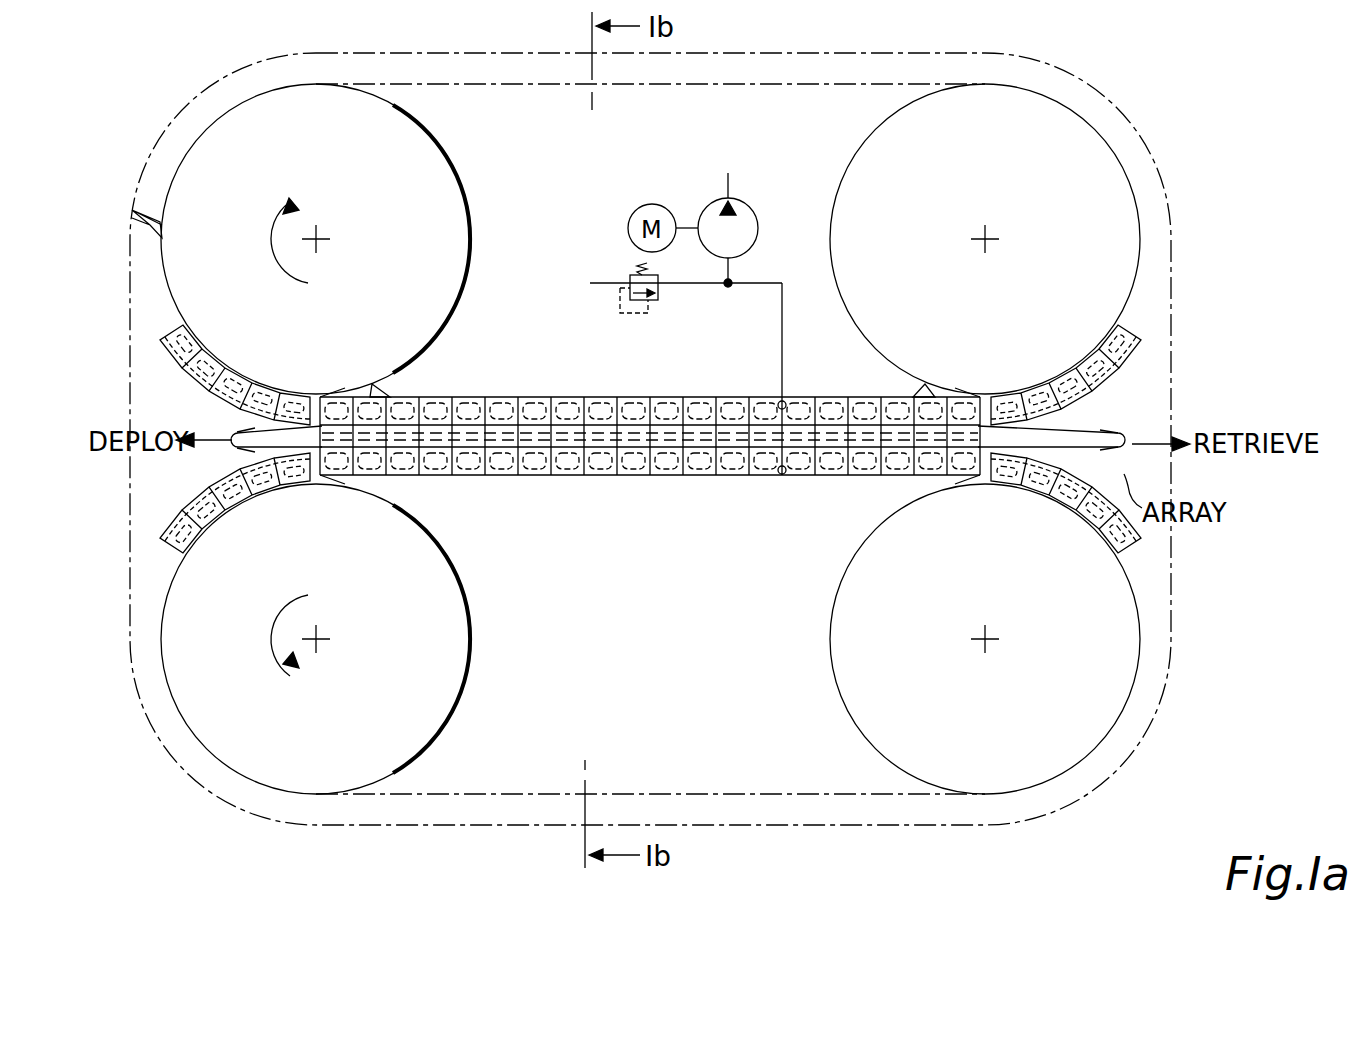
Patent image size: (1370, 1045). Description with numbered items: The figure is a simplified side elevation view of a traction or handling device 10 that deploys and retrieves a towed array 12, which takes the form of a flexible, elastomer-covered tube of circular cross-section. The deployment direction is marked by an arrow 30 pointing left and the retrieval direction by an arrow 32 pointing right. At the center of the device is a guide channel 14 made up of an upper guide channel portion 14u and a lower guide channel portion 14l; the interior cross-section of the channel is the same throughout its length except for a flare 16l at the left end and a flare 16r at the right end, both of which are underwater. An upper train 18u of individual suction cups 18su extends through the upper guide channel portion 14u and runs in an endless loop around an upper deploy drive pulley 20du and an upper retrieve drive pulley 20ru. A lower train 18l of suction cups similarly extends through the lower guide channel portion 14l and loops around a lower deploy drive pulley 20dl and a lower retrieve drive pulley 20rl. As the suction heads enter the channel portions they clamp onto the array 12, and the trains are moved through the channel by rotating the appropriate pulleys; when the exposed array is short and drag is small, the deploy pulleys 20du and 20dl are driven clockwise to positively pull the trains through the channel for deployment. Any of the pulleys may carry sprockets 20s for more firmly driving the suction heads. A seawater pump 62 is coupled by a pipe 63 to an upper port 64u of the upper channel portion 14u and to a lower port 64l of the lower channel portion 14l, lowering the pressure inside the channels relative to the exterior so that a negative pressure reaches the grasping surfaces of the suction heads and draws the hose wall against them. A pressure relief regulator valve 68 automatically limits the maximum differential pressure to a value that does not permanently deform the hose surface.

The traction or handling device 10 is at (96, 553).
The towed array 12 is at (240, 434).
The guide channel 14 is at (650, 503).
The upper guide channel portion 14u is at (616, 396).
The lower guide channel portion 14l is at (644, 481).
The left flare 16l is at (382, 388).
The right flare 16r is at (930, 392).
The upper train 18u is at (778, 84).
The lower train 18l is at (1190, 550).
The upper train suction cups 18su is at (1146, 346).
The upper deploy drive pulley 20du is at (440, 148).
The upper retrieve drive pulley 20ru is at (866, 148).
The lower deploy drive pulley 20dl is at (460, 683).
The lower retrieve drive pulley 20rl is at (842, 683).
The sprockets 20s is at (134, 216).
The deployment direction arrow 30 is at (214, 446).
The retrieval direction arrow 32 is at (1152, 444).
The seawater pump 62 is at (748, 216).
The pipe 63 is at (782, 352).
The upper port 64u is at (782, 398).
The lower port 64l is at (782, 476).
The pressure relief regulator valve 68 is at (654, 296).